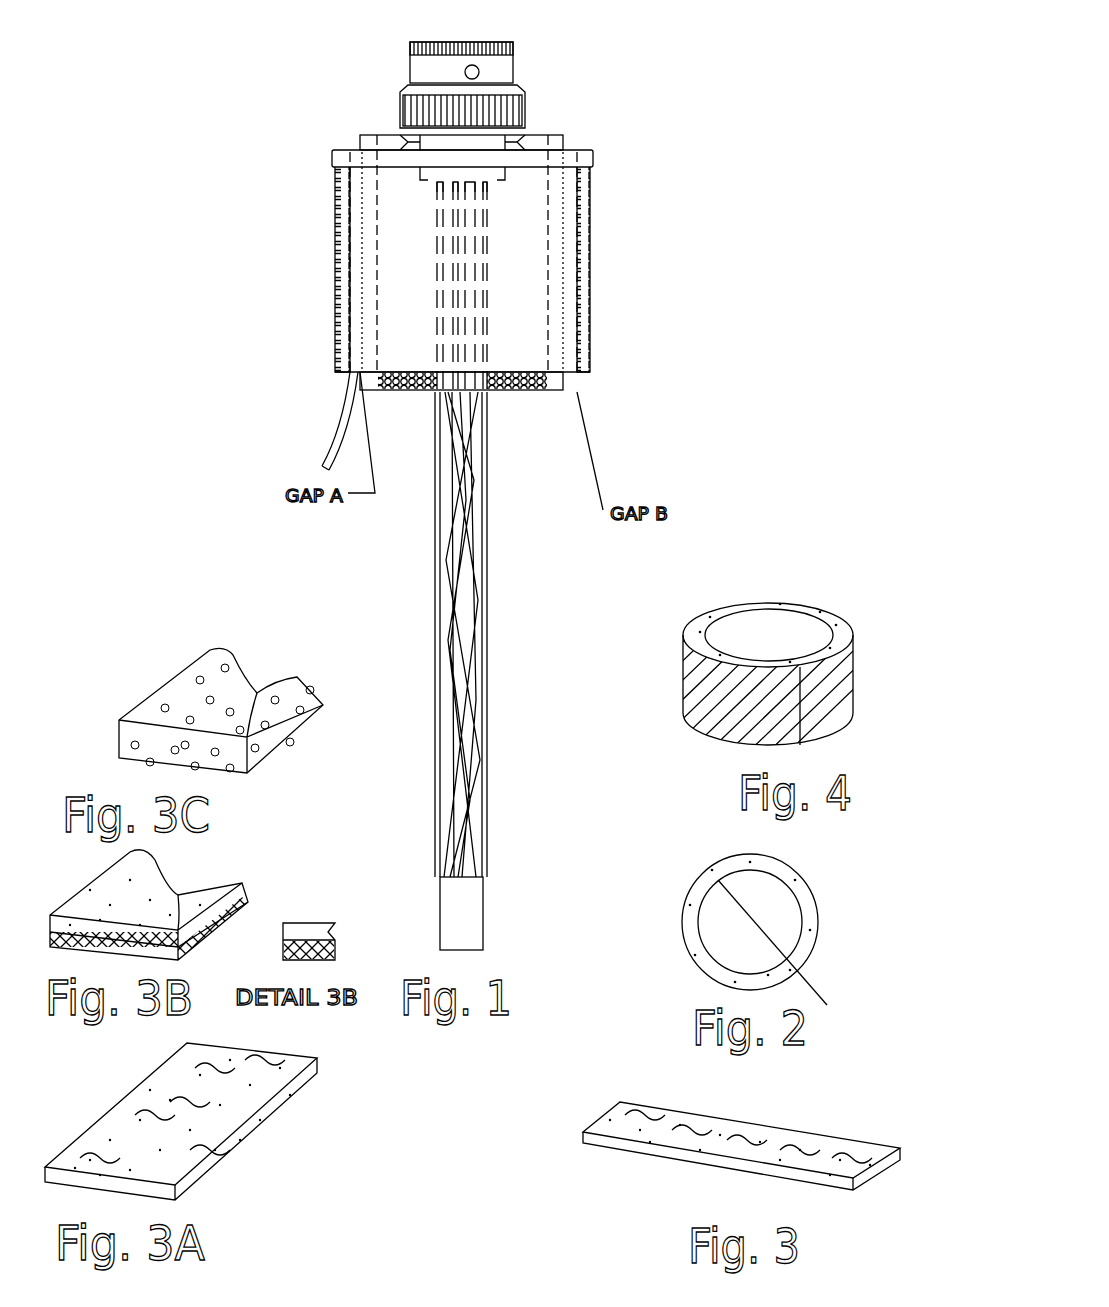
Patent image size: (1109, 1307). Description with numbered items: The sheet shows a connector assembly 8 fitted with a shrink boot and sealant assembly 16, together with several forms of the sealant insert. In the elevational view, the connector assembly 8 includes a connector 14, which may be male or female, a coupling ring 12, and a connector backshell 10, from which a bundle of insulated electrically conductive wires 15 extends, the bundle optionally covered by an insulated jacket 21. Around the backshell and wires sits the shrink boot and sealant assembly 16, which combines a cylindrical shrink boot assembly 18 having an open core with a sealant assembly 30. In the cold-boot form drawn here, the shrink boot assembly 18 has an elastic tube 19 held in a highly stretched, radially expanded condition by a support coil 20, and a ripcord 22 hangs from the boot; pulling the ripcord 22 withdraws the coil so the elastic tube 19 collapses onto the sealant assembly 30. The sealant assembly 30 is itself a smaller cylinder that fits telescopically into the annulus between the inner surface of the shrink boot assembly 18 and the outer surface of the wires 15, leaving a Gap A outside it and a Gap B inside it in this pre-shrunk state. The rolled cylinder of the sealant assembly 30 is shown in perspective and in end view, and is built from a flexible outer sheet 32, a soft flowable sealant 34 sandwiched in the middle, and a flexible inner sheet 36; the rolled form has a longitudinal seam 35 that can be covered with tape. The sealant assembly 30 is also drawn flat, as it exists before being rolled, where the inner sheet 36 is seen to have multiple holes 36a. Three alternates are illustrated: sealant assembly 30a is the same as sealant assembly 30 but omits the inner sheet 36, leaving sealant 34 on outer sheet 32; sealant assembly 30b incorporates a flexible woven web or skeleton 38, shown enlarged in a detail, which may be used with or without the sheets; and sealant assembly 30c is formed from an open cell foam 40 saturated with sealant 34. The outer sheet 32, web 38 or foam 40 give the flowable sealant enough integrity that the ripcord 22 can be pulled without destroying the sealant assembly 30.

In FIG. 1, the connector assembly 8 is at (402, 85).
In FIG. 1, the connector backshell 10 is at (492, 146).
In FIG. 1, the coupling ring 12 is at (400, 111).
In FIG. 1, the connector 14 is at (452, 42).
In FIG. 1, the insulated electrically conductive wires 15 is at (435, 595).
In FIG. 1, the shrink boot and sealant assembly 16 is at (600, 272).
In FIG. 1, the shrink boot assembly 18 is at (335, 255).
In FIG. 1, the elastic tube 19 is at (588, 373).
In FIG. 1, the support coil 20 is at (570, 378).
In FIG. 1, the insulated jacket 21 is at (502, 917).
In FIG. 1, the ripcord 22 is at (335, 435).
In FIG. 1, the sealant assembly 30 is at (375, 388).
In FIG. 3A, the sealant assembly 30a is at (313, 1118).
In FIG. 3B, the sealant assembly 30b is at (255, 903).
In FIG. 3C, the sealant assembly 30c is at (310, 733).
In FIG. 4, the outer sheet 32 is at (853, 695).
In FIG. 2, the outer sheet 32 is at (725, 858).
In FIG. 3A, the outer sheet 32 is at (228, 1147).
In FIG. 3, the outer sheet 32 is at (690, 1162).
In FIG. 4, the flowable sealant 34 is at (830, 618).
In FIG. 2, the flowable sealant 34 is at (802, 890).
In FIG. 3A, the flowable sealant 34 is at (320, 1070).
In FIG. 3, the flowable sealant 34 is at (905, 1152).
In FIG. 4, the seam 35 is at (745, 740).
In FIG. 2, the inner sheet 36 is at (787, 948).
In FIG. 3, the inner sheet 36 is at (735, 1123).
In FIG. 3, the holes 36a is at (858, 1150).
In FIG. 3B, the web or skeleton 38 is at (283, 955).
In FIG. 3C, the open cell foam 40 is at (115, 757).